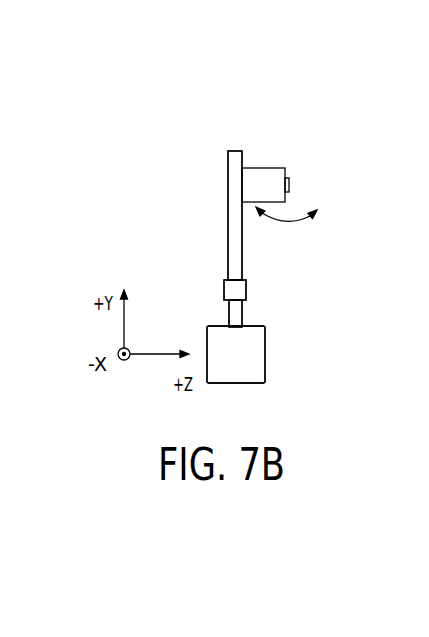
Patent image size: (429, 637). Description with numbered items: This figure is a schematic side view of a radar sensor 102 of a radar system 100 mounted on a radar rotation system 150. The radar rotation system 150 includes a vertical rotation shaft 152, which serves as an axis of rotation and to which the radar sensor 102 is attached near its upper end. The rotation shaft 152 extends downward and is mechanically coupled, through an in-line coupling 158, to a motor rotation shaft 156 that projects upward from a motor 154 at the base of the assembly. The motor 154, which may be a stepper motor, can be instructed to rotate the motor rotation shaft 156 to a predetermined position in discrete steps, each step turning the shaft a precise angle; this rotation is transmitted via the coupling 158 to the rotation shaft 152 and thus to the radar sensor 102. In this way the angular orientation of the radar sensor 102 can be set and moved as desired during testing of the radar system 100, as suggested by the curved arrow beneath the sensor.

The radar system 100 is at (287, 159).
The radar sensor 102 is at (290, 187).
The radar rotation system 150 is at (177, 164).
The rotation shaft 152 is at (232, 152).
The motor 154 is at (270, 356).
The motor rotation shaft 156 is at (243, 320).
The coupling 158 is at (247, 292).